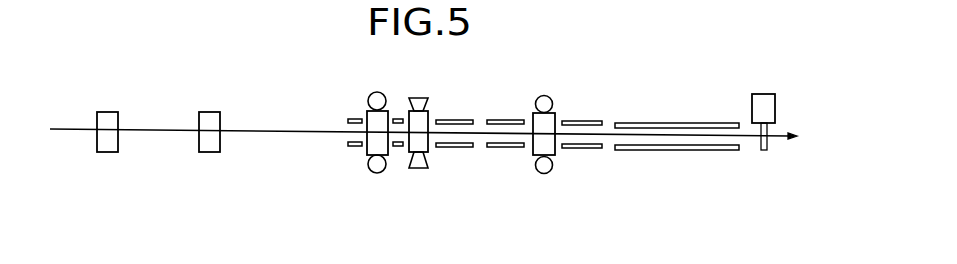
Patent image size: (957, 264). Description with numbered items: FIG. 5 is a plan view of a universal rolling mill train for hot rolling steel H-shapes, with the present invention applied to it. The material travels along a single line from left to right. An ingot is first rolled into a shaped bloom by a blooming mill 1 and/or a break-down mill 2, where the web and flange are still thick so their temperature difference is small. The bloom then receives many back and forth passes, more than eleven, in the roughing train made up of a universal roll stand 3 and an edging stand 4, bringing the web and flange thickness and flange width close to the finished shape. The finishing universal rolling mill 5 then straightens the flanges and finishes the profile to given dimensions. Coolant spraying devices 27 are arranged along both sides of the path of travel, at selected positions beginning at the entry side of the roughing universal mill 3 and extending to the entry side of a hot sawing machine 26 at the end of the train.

The blooming mill 1 is at (108, 115).
The break-down mill 2 is at (210, 115).
The universal roll stand 3 is at (377, 92).
The edging stand 4 is at (415, 100).
The finishing universal rolling mill 5 is at (543, 96).
The hot sawing machine 26 is at (760, 94).
The coolant spraying devices 27 is at (350, 142).